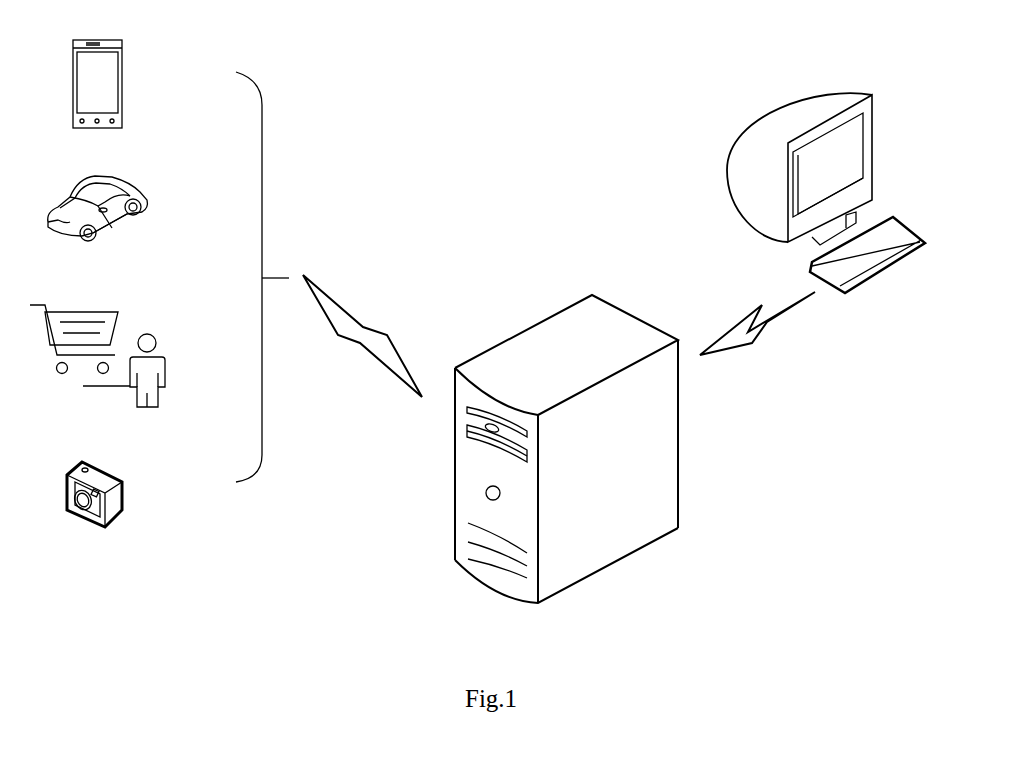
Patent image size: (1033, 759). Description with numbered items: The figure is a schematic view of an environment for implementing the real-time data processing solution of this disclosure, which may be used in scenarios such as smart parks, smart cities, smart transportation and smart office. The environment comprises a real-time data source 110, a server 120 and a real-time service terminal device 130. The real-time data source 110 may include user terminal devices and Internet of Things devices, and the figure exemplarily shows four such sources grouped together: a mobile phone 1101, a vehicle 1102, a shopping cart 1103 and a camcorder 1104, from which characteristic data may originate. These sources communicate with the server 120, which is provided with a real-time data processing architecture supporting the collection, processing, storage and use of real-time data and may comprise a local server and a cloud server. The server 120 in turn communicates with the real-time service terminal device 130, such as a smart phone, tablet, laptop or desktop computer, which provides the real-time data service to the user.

The real-time data source 110 is at (155, 24).
The mobile phone 1101 is at (122, 78).
The vehicle 1102 is at (145, 192).
The shopping cart 1103 is at (145, 333).
The camcorder 1104 is at (120, 472).
The server 120 is at (682, 449).
The real-time service terminal device 130 is at (867, 147).